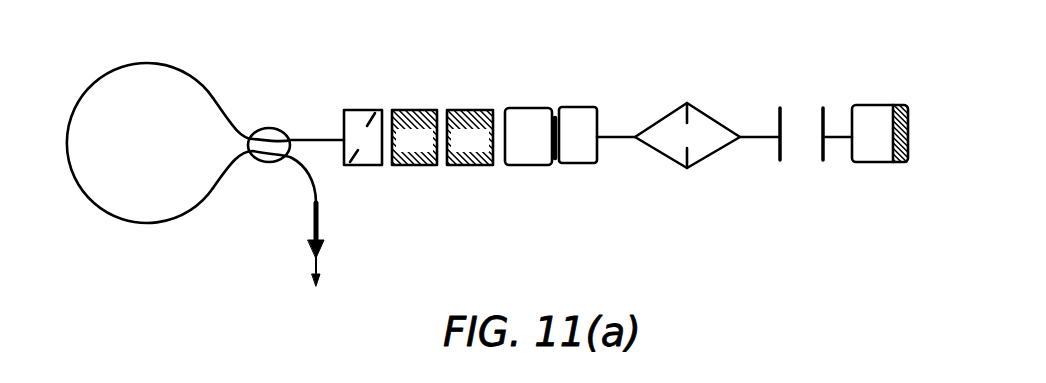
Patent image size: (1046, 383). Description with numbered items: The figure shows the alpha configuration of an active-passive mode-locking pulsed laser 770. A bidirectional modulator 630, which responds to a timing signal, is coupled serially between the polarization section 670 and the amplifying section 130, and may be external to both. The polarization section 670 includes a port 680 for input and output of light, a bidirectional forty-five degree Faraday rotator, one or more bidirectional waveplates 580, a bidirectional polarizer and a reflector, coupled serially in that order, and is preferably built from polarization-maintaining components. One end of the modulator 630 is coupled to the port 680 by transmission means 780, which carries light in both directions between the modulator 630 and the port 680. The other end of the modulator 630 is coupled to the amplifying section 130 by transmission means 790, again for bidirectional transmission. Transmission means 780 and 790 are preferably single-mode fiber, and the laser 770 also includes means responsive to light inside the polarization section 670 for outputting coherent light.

The polarization section 670 is at (564, 62).
The active-passive mode-locking pulsed laser 770 is at (584, 47).
The bidirectional waveplates 580 is at (467, 165).
The port 680 is at (549, 166).
The transmission means 780 is at (556, 118).
The bidirectional modulator 630 is at (613, 99).
The transmission means 790 is at (618, 138).
The amplifying section 130 is at (922, 100).